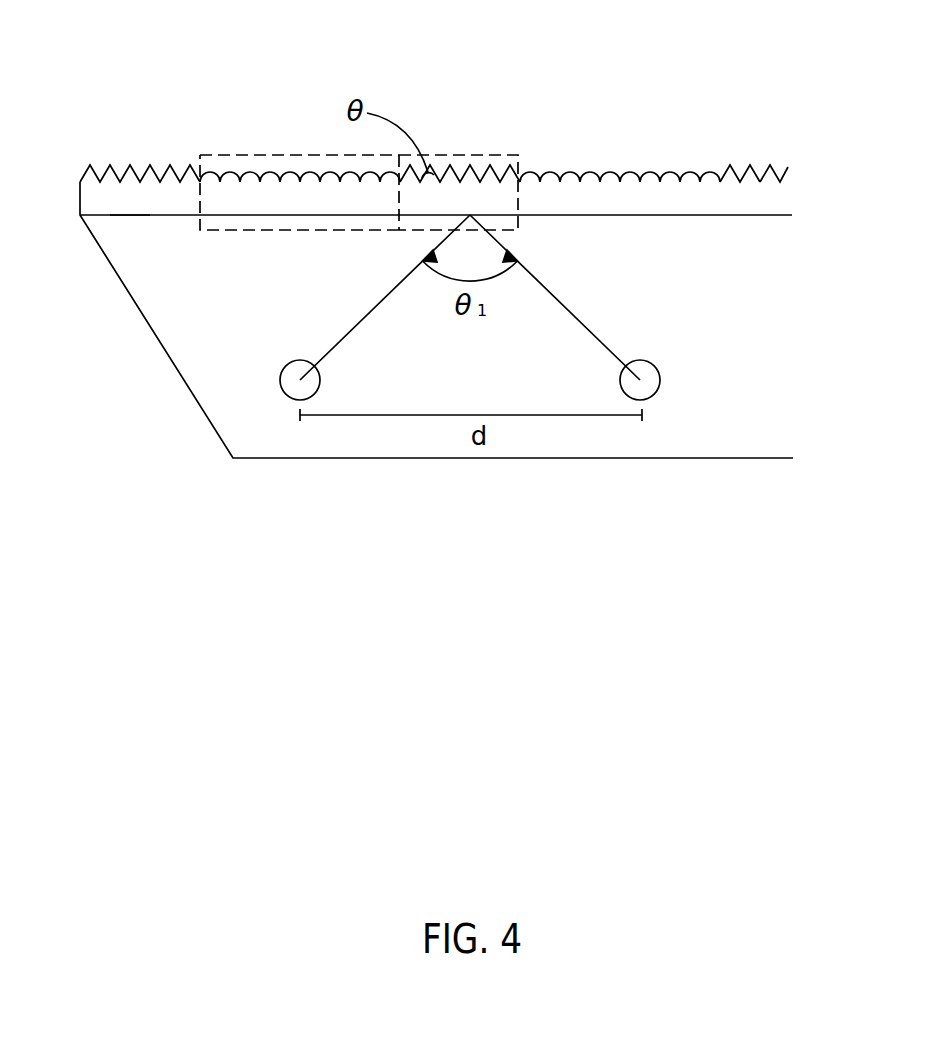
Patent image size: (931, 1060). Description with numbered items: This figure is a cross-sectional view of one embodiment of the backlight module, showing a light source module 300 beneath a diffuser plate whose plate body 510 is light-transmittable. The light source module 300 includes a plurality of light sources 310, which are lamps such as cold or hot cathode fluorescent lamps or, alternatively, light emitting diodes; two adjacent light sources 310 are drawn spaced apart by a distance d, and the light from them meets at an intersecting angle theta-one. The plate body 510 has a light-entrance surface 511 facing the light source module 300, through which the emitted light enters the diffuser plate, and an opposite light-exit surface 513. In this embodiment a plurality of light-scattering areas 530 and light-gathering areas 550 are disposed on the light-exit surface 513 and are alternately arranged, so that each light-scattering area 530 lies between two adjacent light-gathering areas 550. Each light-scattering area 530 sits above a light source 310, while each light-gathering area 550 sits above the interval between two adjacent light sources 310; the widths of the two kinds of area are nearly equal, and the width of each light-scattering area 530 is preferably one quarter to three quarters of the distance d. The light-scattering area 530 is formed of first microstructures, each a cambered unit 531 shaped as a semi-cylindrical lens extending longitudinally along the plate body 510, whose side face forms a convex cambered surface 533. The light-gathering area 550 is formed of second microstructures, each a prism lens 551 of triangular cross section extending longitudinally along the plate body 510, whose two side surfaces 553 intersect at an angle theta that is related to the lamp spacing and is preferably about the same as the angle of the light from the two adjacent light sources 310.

The light source module 300 is at (197, 405).
The light source 310 is at (657, 393).
The plate body 510 is at (778, 197).
The light-entrance surface 511 is at (130, 214).
The light-exit surface 513 is at (131, 167).
The light-scattering area 530 is at (290, 155).
The cambered unit 531 is at (552, 170).
The convex cambered surface 533 is at (612, 170).
The light-gathering area 550 is at (458, 155).
The prism lens 551 is at (738, 170).
The side surface 553 is at (775, 173).